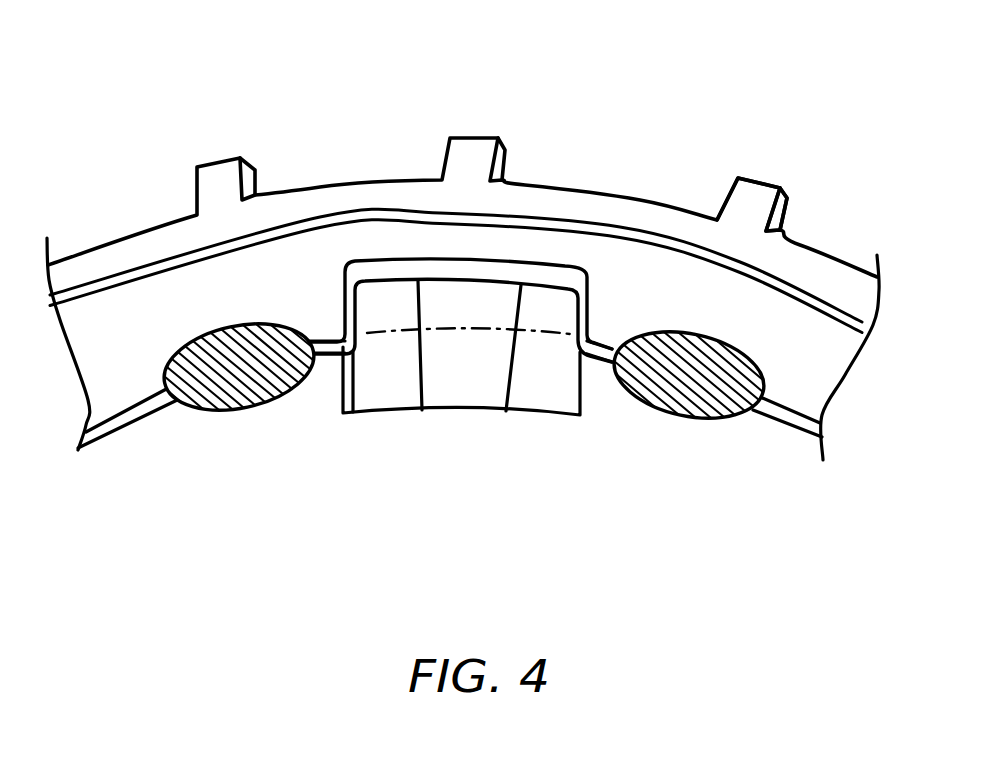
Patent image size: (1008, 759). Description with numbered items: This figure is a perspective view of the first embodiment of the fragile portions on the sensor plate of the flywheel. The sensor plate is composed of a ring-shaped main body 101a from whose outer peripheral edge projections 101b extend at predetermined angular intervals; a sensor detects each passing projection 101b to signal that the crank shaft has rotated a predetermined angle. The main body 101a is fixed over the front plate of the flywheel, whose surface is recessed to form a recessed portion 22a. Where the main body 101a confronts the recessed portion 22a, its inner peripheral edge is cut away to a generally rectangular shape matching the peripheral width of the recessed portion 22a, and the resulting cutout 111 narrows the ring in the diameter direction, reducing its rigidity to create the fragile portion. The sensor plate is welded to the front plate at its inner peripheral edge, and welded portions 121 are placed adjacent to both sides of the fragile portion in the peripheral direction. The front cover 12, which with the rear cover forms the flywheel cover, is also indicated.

The front cover 12 is at (170, 435).
The ring-shaped main body 101a is at (580, 204).
The projection 101b is at (755, 196).
The cutout 111 is at (440, 267).
The recessed portion 22a is at (463, 377).
The welded portion 121 is at (232, 368).